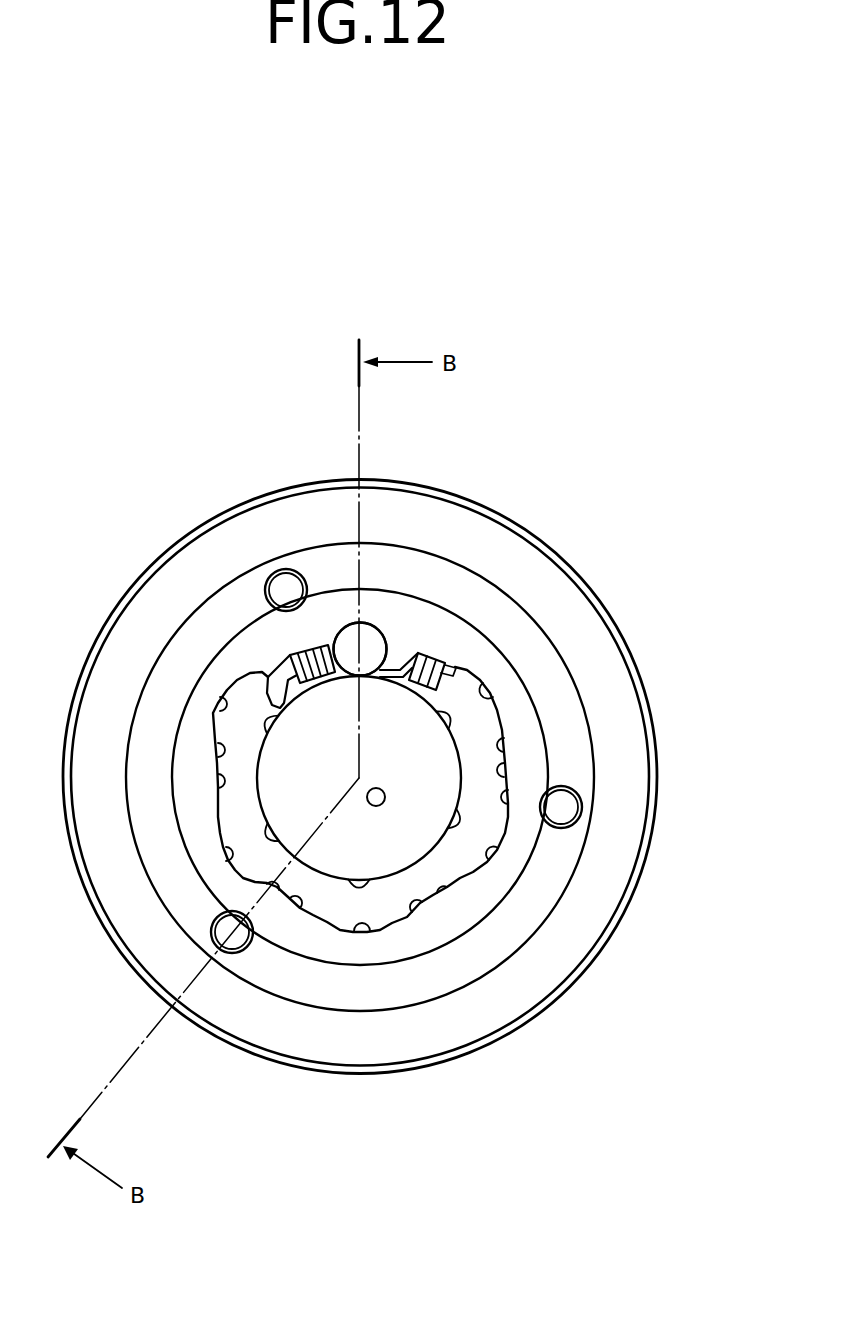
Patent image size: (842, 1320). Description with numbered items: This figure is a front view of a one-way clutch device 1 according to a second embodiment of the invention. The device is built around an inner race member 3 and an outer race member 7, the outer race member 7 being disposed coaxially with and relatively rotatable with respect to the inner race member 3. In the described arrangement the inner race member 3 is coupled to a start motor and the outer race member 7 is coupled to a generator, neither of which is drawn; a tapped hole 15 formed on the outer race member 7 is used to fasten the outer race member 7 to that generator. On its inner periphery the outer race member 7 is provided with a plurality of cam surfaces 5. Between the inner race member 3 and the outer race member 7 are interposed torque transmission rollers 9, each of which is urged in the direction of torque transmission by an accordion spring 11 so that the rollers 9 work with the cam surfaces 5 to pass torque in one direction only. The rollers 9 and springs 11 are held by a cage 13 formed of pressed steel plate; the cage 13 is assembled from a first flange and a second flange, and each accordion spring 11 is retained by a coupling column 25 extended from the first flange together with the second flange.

The one-way clutch device 1 is at (158, 391).
The inner race member 3 is at (430, 825).
The cam surface 5 is at (375, 642).
The outer race member 7 is at (593, 902).
The torque transmission roller 9 is at (378, 645).
The accordion spring 11 is at (447, 660).
The cage 13 is at (477, 740).
The tapped hole 15 is at (570, 807).
The coupling column 25 is at (290, 663).